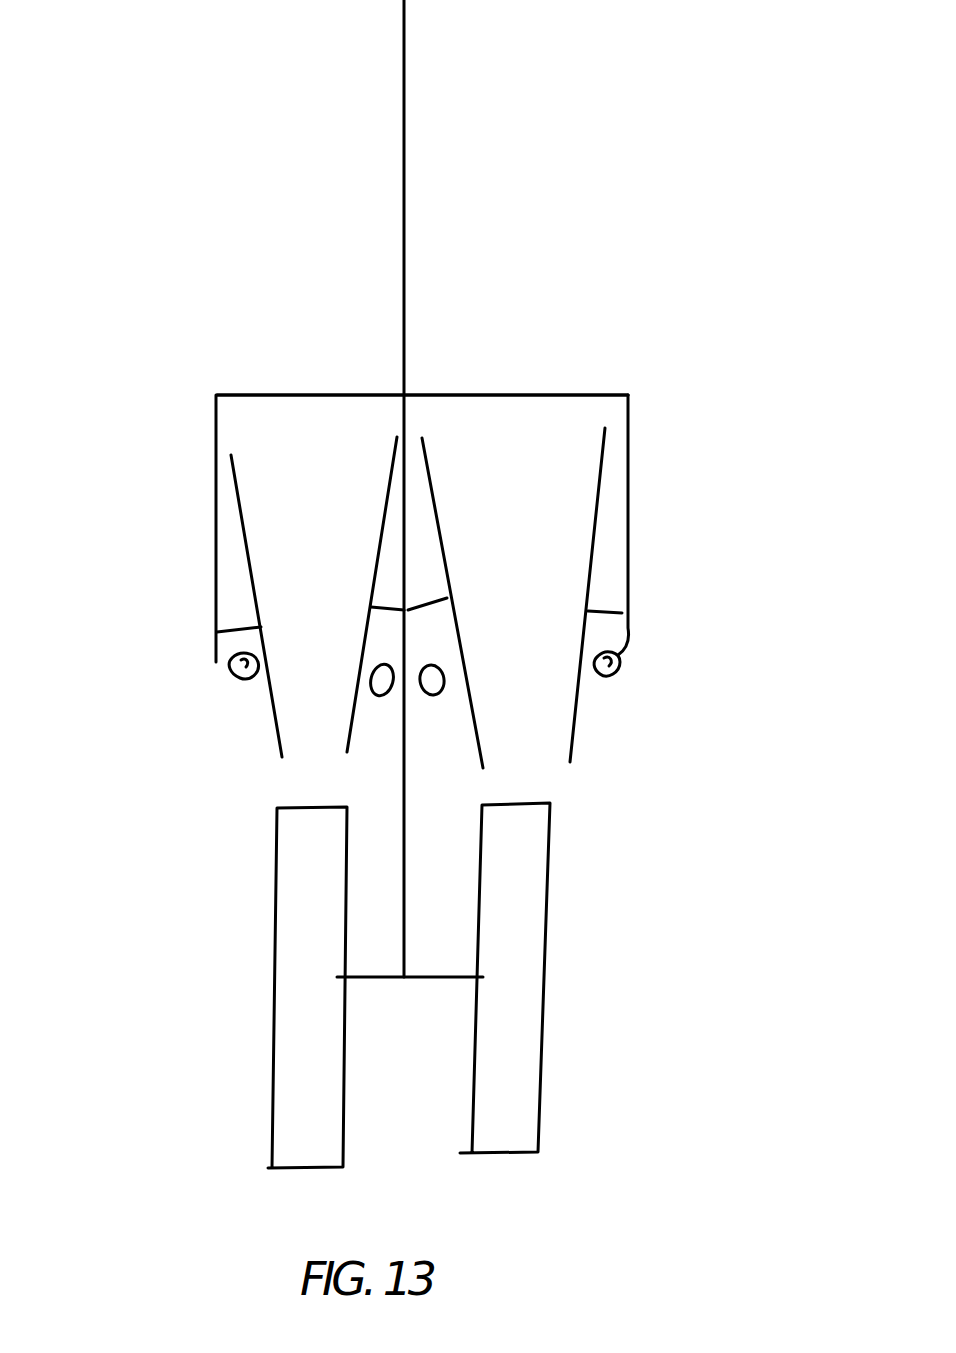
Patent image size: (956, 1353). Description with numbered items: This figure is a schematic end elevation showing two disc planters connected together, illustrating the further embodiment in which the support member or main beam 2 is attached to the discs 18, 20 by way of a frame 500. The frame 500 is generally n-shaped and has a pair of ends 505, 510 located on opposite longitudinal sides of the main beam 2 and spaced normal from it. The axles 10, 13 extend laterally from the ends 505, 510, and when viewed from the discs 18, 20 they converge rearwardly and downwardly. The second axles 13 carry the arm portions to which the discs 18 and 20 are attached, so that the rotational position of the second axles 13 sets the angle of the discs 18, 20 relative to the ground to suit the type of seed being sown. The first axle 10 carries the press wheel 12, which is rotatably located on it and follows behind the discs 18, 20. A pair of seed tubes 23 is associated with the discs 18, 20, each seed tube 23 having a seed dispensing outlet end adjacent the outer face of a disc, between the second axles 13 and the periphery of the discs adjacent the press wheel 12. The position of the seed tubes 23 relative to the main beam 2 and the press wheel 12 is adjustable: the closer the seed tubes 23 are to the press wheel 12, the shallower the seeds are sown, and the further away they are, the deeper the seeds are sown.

The main beam 2 is at (404, 209).
The frame 500 is at (688, 331).
The end of frame 505 is at (628, 404).
The end of frame 510 is at (216, 455).
The second axle 13 is at (215, 633).
The disc 18 is at (271, 732).
The seed tube 23 is at (225, 684).
The disc 20 is at (338, 747).
The first axle 10 is at (607, 610).
The press wheel 12 is at (303, 1087).